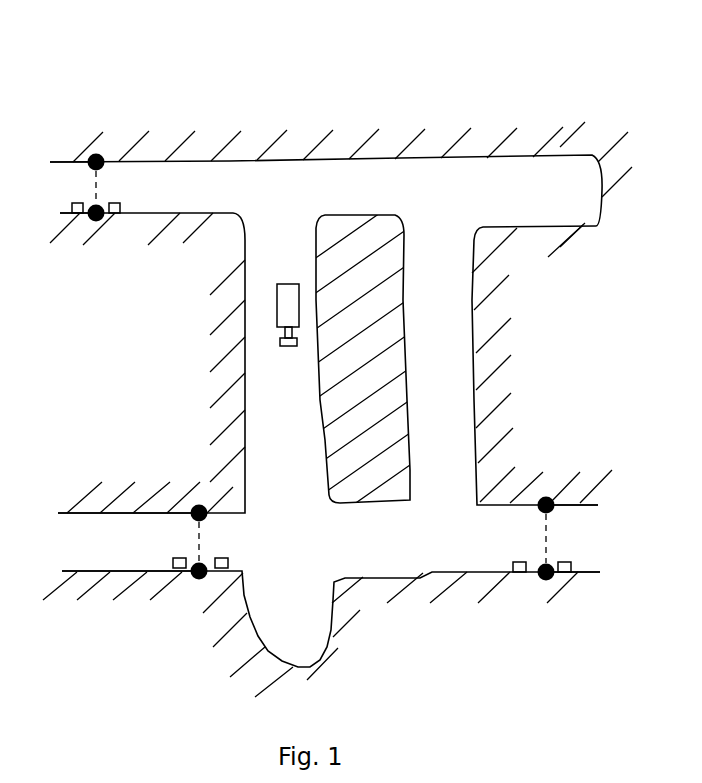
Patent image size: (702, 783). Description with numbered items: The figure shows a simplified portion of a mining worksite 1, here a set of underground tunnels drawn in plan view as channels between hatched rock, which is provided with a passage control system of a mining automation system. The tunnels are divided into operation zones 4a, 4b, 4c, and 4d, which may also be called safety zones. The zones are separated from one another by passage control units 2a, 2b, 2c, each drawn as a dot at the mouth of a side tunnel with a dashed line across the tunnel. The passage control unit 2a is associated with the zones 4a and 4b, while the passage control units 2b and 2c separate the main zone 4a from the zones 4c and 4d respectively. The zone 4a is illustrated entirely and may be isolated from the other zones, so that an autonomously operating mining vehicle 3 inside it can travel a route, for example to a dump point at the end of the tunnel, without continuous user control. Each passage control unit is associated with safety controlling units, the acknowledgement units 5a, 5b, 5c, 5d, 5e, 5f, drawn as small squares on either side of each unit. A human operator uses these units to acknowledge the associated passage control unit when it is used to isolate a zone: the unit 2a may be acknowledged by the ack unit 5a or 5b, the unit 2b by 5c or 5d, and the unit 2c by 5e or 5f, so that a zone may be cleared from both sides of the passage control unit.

The mining worksite 1 is at (314, 101).
The passage control unit 2a is at (100, 182).
The passage control unit 2b is at (197, 521).
The passage control unit 2c is at (548, 520).
The autonomously operating mining vehicle 3 is at (278, 305).
The operation zone 4a is at (297, 211).
The operation zone 4b is at (63, 199).
The operation zone 4c is at (130, 553).
The operation zone 4d is at (608, 551).
The acknowledgement unit 5a is at (77, 215).
The acknowledgement unit 5b is at (113, 215).
The acknowledgement unit 5c is at (182, 570).
The acknowledgement unit 5d is at (228, 566).
The acknowledgement unit 5e is at (520, 574).
The acknowledgement unit 5f is at (567, 574).